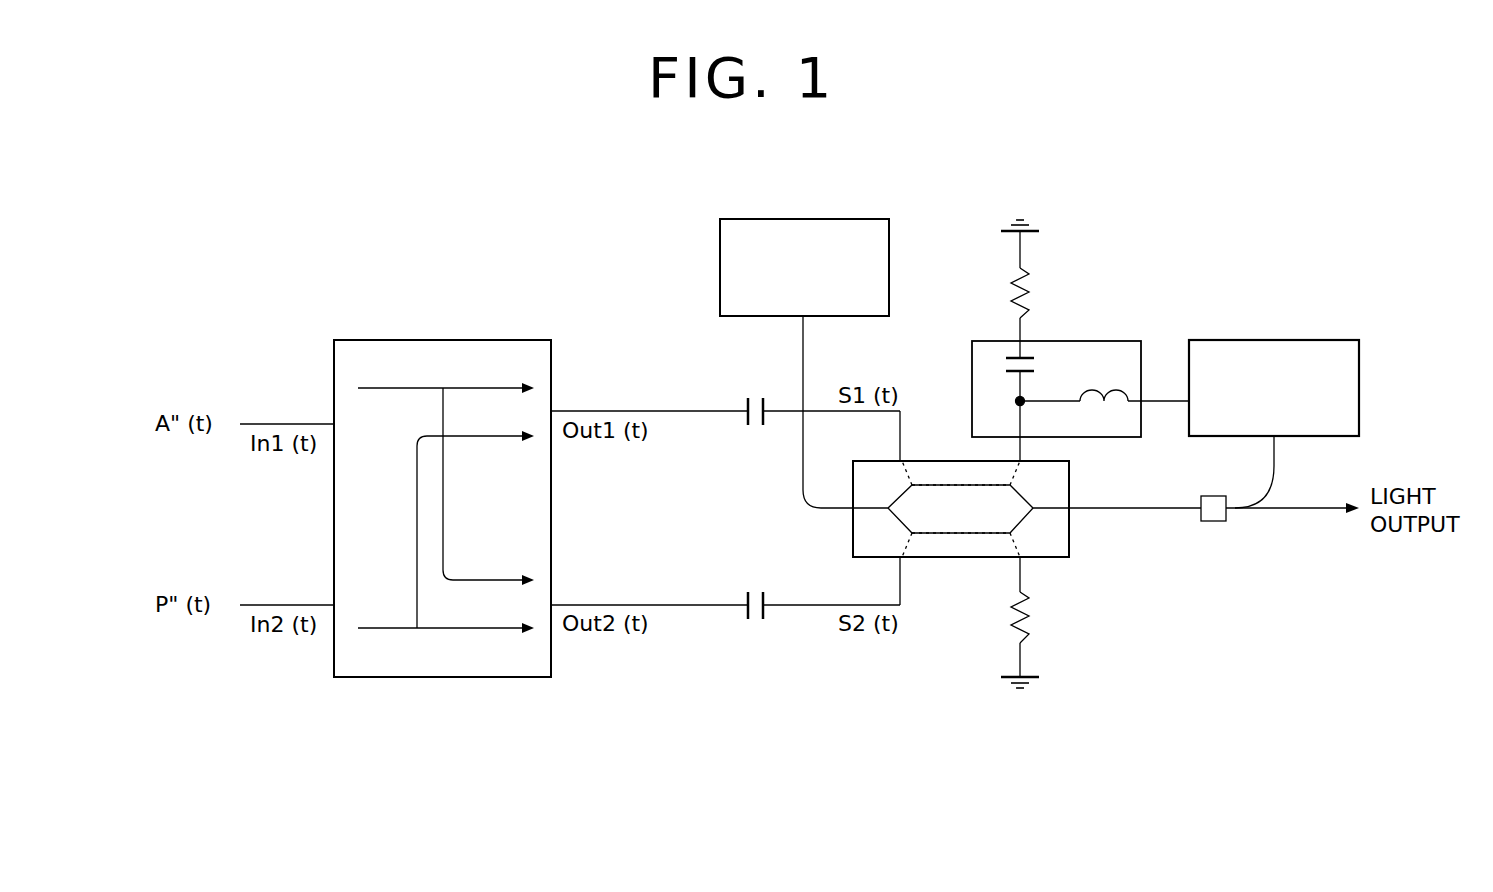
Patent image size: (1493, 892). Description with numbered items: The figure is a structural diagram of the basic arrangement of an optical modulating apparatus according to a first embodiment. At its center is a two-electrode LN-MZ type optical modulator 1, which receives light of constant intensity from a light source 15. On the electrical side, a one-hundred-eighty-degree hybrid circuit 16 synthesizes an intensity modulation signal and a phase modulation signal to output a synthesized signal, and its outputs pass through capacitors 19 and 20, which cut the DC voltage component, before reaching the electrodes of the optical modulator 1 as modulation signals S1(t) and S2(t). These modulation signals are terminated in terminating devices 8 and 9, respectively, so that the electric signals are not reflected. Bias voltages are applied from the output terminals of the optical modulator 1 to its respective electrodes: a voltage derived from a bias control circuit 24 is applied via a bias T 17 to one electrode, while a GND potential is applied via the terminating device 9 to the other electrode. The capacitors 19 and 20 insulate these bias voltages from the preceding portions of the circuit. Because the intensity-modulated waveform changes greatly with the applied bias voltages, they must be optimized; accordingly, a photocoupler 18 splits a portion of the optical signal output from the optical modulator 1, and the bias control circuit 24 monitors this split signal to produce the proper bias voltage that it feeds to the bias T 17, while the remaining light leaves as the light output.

The 2-electrode LN-MZ type optical modulator 1 is at (940, 461).
The terminating device 8 is at (1033, 272).
The terminating device 9 is at (1033, 614).
The light source 15 is at (842, 219).
The 180-degree hybrid circuit 16 is at (437, 340).
The bias T 17 is at (1095, 341).
The photocoupler 18 is at (1213, 522).
The capacitor 19 is at (757, 428).
The capacitor 20 is at (757, 622).
The bias control circuit 24 is at (1300, 340).